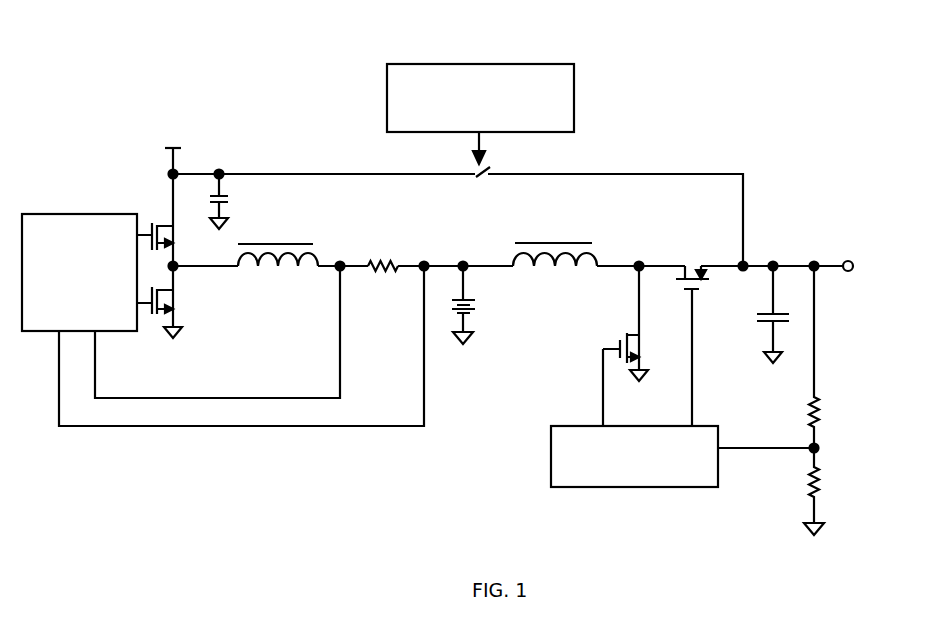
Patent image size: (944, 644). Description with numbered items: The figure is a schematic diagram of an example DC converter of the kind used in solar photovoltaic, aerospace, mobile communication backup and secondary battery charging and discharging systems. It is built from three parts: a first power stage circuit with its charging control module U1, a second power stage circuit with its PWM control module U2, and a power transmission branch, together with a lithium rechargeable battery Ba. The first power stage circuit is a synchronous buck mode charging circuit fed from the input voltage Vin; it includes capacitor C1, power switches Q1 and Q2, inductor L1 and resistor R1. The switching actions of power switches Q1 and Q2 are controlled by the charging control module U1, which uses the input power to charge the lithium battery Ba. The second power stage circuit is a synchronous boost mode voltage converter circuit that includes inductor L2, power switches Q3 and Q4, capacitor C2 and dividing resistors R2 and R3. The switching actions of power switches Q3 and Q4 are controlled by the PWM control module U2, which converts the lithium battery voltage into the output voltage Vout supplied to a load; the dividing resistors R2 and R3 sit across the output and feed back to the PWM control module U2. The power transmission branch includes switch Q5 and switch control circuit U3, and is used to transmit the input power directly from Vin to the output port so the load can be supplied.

The input voltage Vin is at (177, 136).
The charging control module U1 is at (94, 323).
The power switch Q1 is at (172, 238).
The power switch Q2 is at (172, 301).
The capacitor C1 is at (237, 200).
The switch control circuit U3 is at (539, 121).
The switch Q5 is at (490, 167).
The inductor L1 is at (278, 244).
The resistor R1 is at (387, 253).
The lithium rechargeable battery Ba is at (479, 303).
The inductor L2 is at (555, 244).
The power switch Q3 is at (641, 344).
The power switch Q4 is at (696, 333).
The capacitor C2 is at (754, 313).
The output voltage Vout is at (869, 268).
The PWM control module U2 is at (684, 481).
The dividing resistor R2 is at (833, 357).
The dividing resistor R3 is at (830, 491).